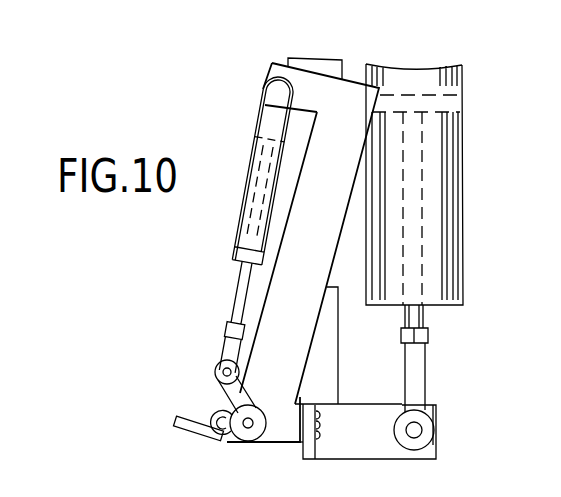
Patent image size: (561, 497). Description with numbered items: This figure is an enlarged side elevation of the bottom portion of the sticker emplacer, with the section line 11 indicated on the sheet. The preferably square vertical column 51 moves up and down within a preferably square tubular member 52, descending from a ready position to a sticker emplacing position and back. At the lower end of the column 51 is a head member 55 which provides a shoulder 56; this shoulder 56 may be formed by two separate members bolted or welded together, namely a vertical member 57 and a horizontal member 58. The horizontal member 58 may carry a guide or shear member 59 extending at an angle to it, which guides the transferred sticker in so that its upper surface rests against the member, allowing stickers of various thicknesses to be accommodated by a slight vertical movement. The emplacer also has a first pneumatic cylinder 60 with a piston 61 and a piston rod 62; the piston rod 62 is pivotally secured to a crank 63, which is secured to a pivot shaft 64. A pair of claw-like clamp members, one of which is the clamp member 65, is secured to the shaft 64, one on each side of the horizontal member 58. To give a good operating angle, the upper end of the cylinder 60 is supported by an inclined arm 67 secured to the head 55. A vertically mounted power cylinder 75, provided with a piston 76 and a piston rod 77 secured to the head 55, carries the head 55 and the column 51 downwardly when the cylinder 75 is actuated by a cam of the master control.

The section line 11- 11 is at (170, 468).
The vertical column 51 is at (328, 370).
The tubular member 52 is at (290, 63).
The head member 55 is at (383, 447).
The shoulder 56 is at (307, 447).
The vertical member 57 is at (318, 450).
The horizontal member 58 is at (287, 438).
The guide or shear member 59 is at (195, 412).
The first pneumatic cylinder 60 is at (247, 185).
The piston 61 is at (268, 146).
The piston rod 62 is at (244, 279).
The crank 63 is at (236, 392).
The pivot shaft 64 is at (248, 430).
The claw-like clamp member 65 is at (222, 405).
The inclined arm 67 is at (313, 301).
The power cylinder 75 is at (447, 128).
The piston 76 is at (443, 93).
The piston rod 77 is at (420, 315).